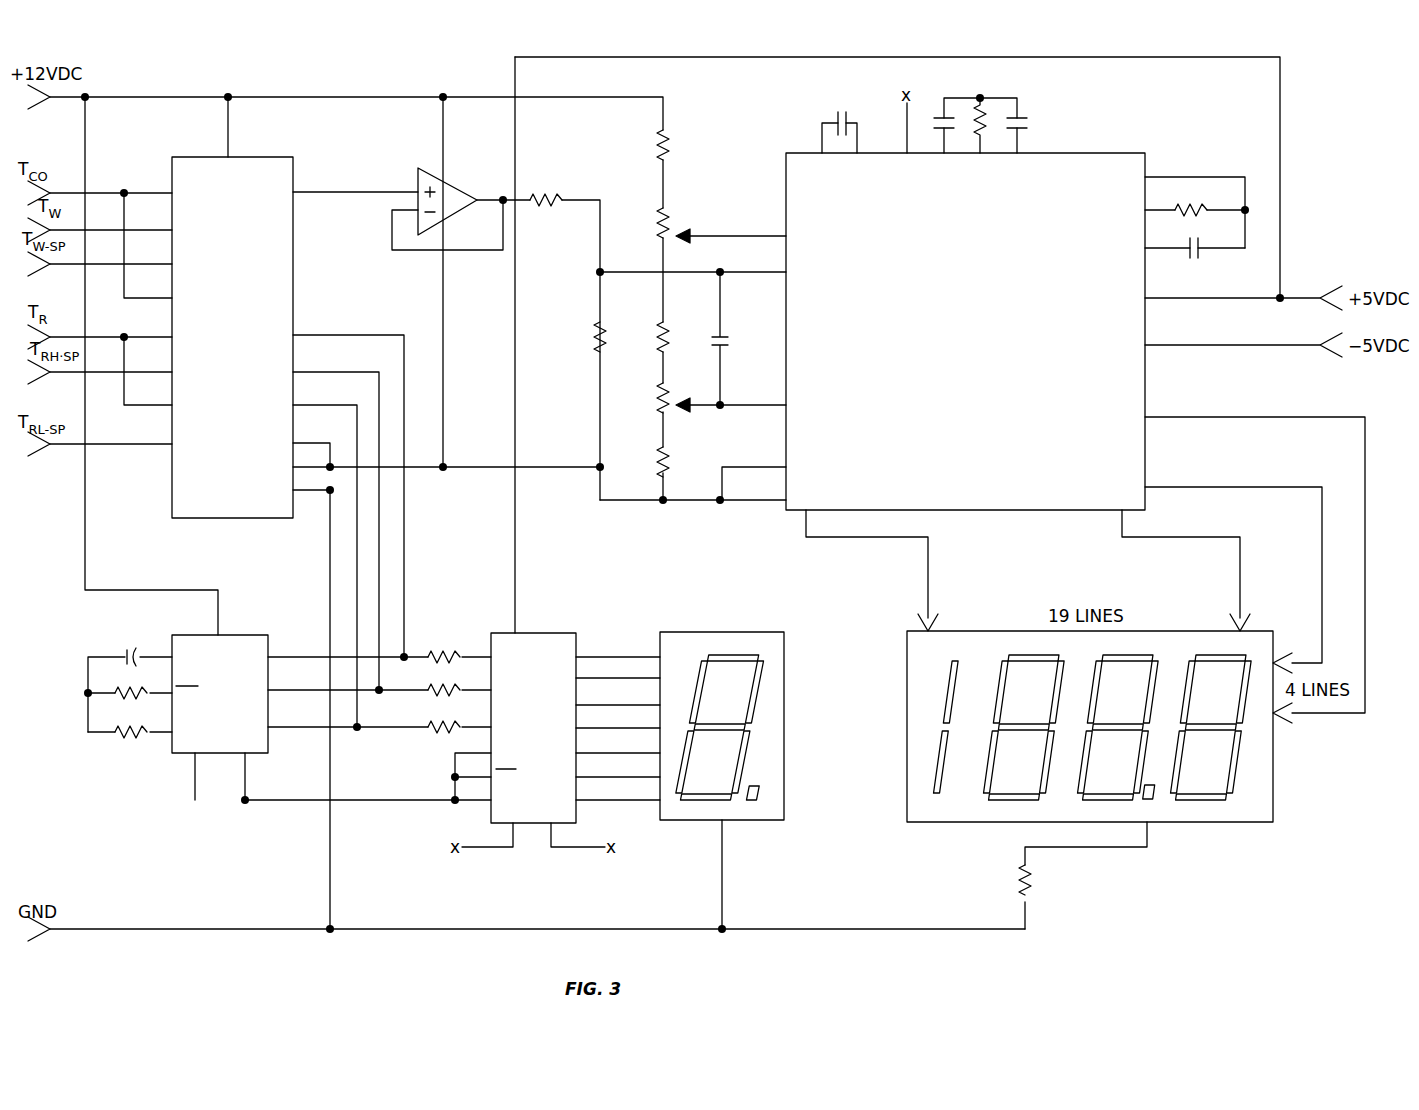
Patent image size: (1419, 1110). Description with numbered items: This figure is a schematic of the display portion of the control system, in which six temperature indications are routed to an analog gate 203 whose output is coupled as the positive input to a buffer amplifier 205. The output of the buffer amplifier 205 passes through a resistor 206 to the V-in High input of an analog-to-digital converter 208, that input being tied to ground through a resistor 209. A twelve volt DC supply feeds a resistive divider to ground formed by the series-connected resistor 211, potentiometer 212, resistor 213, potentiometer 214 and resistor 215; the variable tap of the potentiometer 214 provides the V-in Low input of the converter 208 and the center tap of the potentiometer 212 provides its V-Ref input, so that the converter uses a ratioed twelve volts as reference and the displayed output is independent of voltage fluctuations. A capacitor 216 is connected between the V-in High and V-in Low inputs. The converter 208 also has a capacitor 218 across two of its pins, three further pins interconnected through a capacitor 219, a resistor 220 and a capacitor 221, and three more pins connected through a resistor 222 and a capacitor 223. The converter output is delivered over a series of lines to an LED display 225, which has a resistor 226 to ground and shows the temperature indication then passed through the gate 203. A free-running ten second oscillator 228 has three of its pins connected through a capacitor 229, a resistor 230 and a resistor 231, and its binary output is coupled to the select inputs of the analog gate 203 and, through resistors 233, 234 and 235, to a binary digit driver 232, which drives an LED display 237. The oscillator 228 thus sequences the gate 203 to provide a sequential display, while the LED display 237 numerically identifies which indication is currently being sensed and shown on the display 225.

The analog gate 203 is at (178, 482).
The buffer amplifier 205 is at (420, 170).
The resistor 206 is at (552, 192).
The analog-to-digital converter 208 is at (1119, 152).
The resistor 209 is at (594, 334).
The resistor 211 is at (658, 140).
The potentiometer 212 is at (654, 214).
The resistor 213 is at (652, 332).
The potentiometer 214 is at (658, 394).
The resistor 215 is at (658, 454).
The capacitor 216 is at (726, 342).
The capacitor 218 is at (830, 122).
The capacitor 219 is at (930, 100).
The resistor 220 is at (985, 100).
The capacitor 221 is at (1030, 100).
The resistor 222 is at (1250, 206).
The capacitor 223 is at (1250, 244).
The LED display 225 is at (906, 744).
The resistor 226 is at (1020, 880).
The oscillator 228 is at (258, 632).
The capacitor 229 is at (122, 646).
The resistor 230 is at (94, 684).
The resistor 231 is at (94, 732).
The binary digit driver 232 is at (576, 632).
The resistor 233 is at (422, 722).
The resistor 234 is at (427, 686).
The resistor 235 is at (444, 644).
The LED display 237 is at (784, 735).